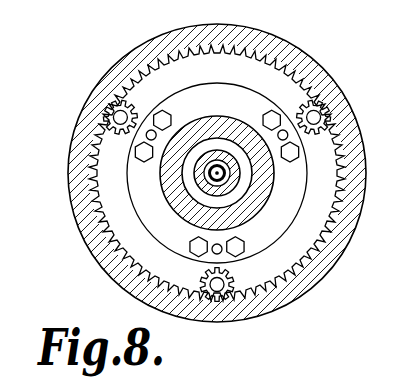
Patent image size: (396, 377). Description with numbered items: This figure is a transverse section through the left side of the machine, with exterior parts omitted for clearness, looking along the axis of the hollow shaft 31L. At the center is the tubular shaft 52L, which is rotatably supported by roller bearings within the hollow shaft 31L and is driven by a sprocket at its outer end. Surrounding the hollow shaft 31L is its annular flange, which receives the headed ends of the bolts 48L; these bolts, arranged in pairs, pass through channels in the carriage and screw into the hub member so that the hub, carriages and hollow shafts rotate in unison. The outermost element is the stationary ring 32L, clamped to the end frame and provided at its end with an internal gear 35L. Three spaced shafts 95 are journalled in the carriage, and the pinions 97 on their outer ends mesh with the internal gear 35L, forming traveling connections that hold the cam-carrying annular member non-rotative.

The ring 32L is at (312, 270).
The internal gear 35L is at (322, 218).
The pinion 97 is at (130, 105).
The shaft 95 is at (119, 126).
The bolt 48L is at (166, 117).
The hollow shaft 31L is at (230, 132).
The tubular shaft 52L is at (222, 173).